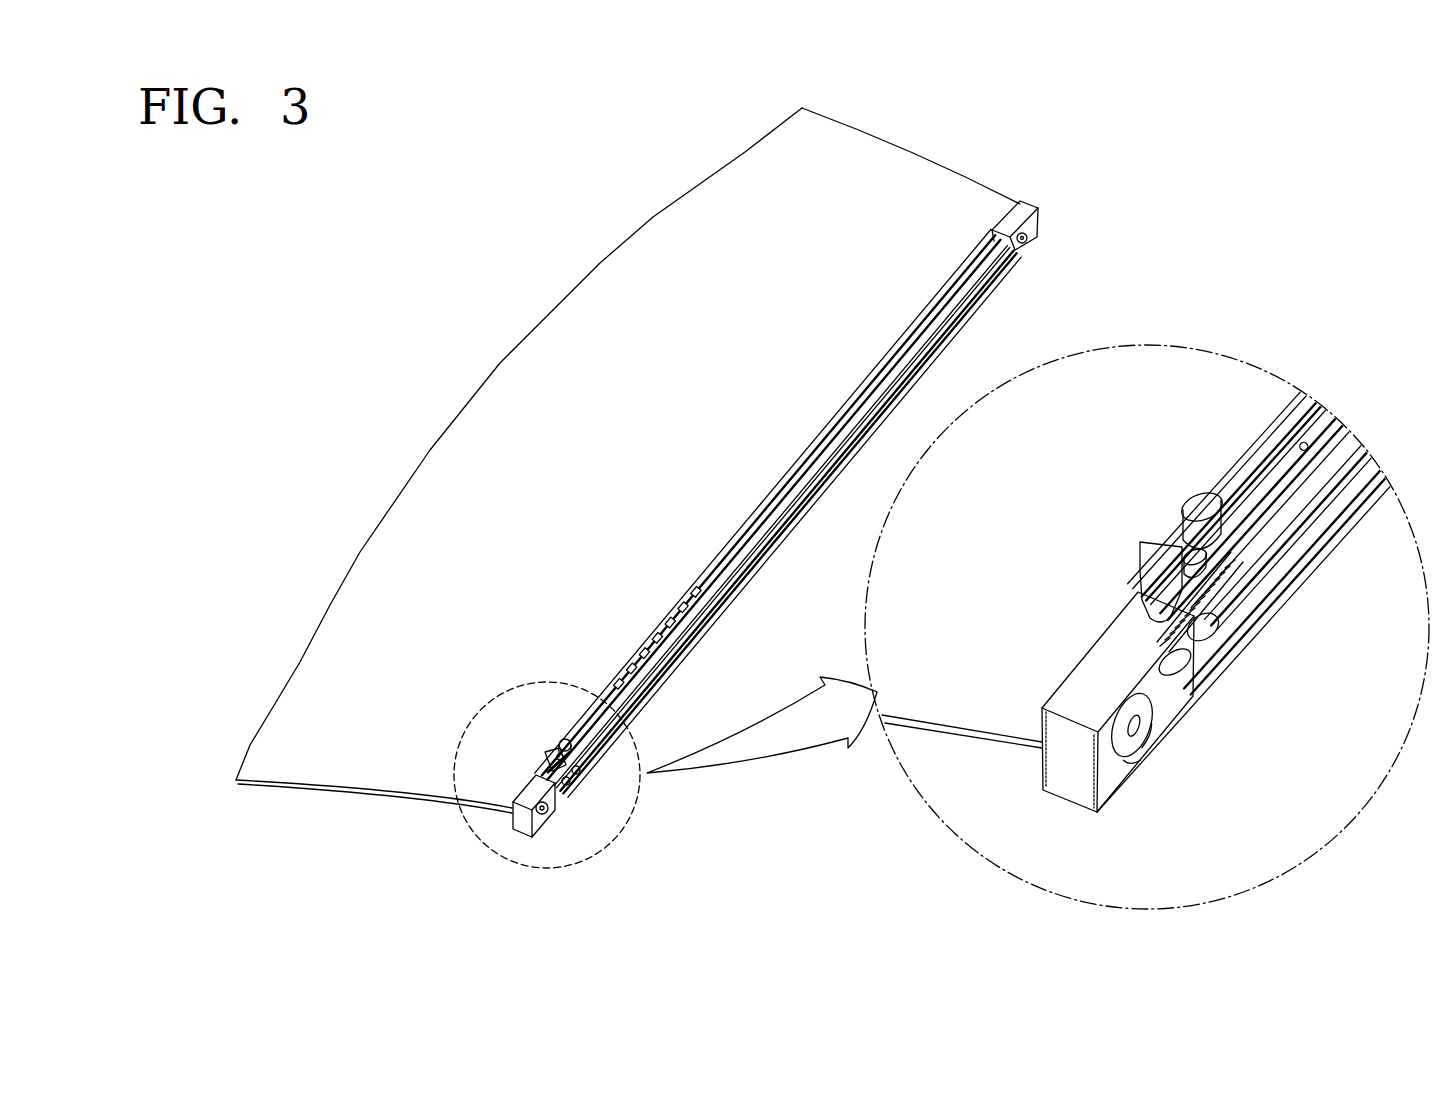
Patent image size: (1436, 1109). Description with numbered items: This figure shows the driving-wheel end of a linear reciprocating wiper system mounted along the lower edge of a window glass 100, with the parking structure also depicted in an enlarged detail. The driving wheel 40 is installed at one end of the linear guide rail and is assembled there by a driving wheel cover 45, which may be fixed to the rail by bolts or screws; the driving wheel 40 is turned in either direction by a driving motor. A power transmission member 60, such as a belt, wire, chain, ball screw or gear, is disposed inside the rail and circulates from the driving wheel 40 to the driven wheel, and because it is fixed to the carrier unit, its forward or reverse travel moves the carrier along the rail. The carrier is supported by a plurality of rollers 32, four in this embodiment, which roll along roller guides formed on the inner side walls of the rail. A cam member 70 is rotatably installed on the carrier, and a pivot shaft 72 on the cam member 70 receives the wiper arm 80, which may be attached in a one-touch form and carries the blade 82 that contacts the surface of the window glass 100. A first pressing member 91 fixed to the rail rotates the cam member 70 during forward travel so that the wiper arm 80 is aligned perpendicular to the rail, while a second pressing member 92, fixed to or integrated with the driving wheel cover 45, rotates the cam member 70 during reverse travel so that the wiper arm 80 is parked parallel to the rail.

The window glass 100 is at (963, 710).
The driving wheel cover 45 is at (516, 800).
The driving wheel 40 is at (540, 810).
The wiper arm 80 is at (593, 702).
The blade 82 is at (687, 625).
The power transmission member 60 is at (608, 731).
The first pressing member 91 is at (570, 722).
The cam member 70 is at (547, 750).
The pivot shaft 72 is at (563, 745).
The second pressing member 92 is at (545, 768).
The roller 32 is at (563, 793).